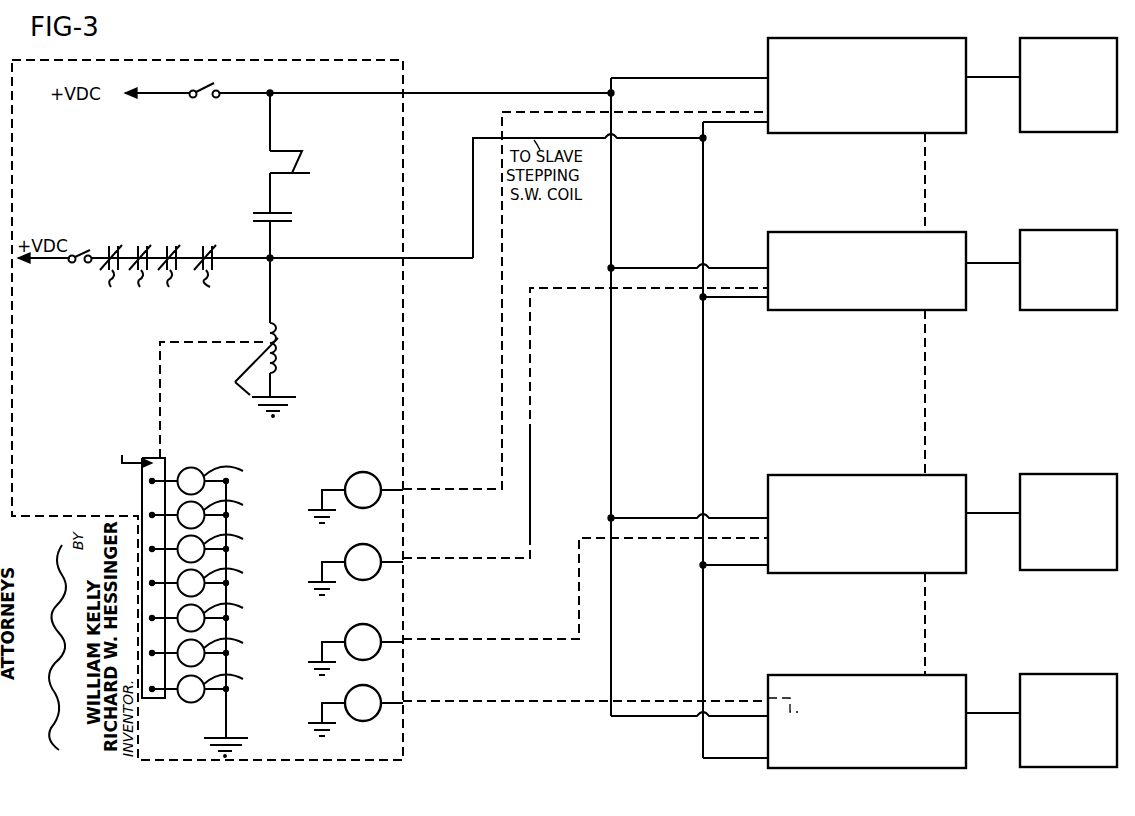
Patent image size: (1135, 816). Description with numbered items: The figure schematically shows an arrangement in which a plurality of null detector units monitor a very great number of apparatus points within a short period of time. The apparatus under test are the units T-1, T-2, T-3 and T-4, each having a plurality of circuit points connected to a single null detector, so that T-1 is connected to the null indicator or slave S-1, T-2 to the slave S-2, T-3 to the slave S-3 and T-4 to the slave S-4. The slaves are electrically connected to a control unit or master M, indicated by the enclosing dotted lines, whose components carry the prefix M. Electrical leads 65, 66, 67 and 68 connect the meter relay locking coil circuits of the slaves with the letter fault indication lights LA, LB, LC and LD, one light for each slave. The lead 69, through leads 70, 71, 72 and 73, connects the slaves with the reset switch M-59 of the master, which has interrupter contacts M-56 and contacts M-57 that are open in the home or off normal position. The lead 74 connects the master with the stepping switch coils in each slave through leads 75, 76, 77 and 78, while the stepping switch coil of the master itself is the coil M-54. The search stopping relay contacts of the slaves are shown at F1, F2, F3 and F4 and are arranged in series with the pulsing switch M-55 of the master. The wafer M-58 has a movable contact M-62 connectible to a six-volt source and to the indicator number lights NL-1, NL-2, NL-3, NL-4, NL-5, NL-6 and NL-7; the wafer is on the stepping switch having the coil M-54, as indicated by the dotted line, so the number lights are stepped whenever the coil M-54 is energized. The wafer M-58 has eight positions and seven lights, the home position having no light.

The electrical lead 65 is at (441, 488).
The electrical lead 66 is at (454, 558).
The electrical lead 67 is at (464, 639).
The electrical lead 68 is at (479, 701).
The lead 69 is at (334, 93).
The lead 70 is at (686, 72).
The lead 71 is at (658, 262).
The lead 72 is at (661, 512).
The lead 73 is at (663, 716).
The lead 74 is at (351, 258).
The lead 75 is at (743, 123).
The lead 76 is at (739, 297).
The lead 77 is at (740, 565).
The lead 78 is at (753, 758).
The stepping switch coil M-54 is at (283, 310).
The pulsing switch M-55 is at (97, 233).
The interrupter contacts M-56 is at (328, 144).
The off normal contacts M-57 is at (292, 213).
The wafer M-58 is at (165, 698).
The reset switch M-59 is at (213, 74).
The movable contact M-62 is at (140, 467).
The master M is at (531, 503).
The search stopping relay contacts F1 is at (106, 276).
The search stopping relay contacts F2 is at (143, 276).
The search stopping relay contacts F3 is at (178, 276).
The search stopping relay contacts F4 is at (216, 276).
The indicator number light NL-1 is at (215, 481).
The indicator number light NL-2 is at (215, 515).
The indicator number light NL-3 is at (215, 549).
The indicator number light NL-4 is at (215, 583).
The indicator number light NL-5 is at (215, 618).
The indicator number light NL-6 is at (215, 653).
The indicator number light NL-7 is at (215, 689).
The letter fault indication light LA is at (355, 497).
The letter fault indication light LB is at (355, 569).
The letter fault indication light LC is at (355, 649).
The letter fault indication light LD is at (355, 710).
The slave S-1 is at (867, 85).
The slave S-2 is at (867, 271).
The slave S-3 is at (867, 524).
The slave S-4 is at (867, 721).
The apparatus under test T-1 is at (1041, 85).
The apparatus under test T-2 is at (1041, 270).
The apparatus under test T-3 is at (1041, 522).
The apparatus under test T-4 is at (1041, 720).